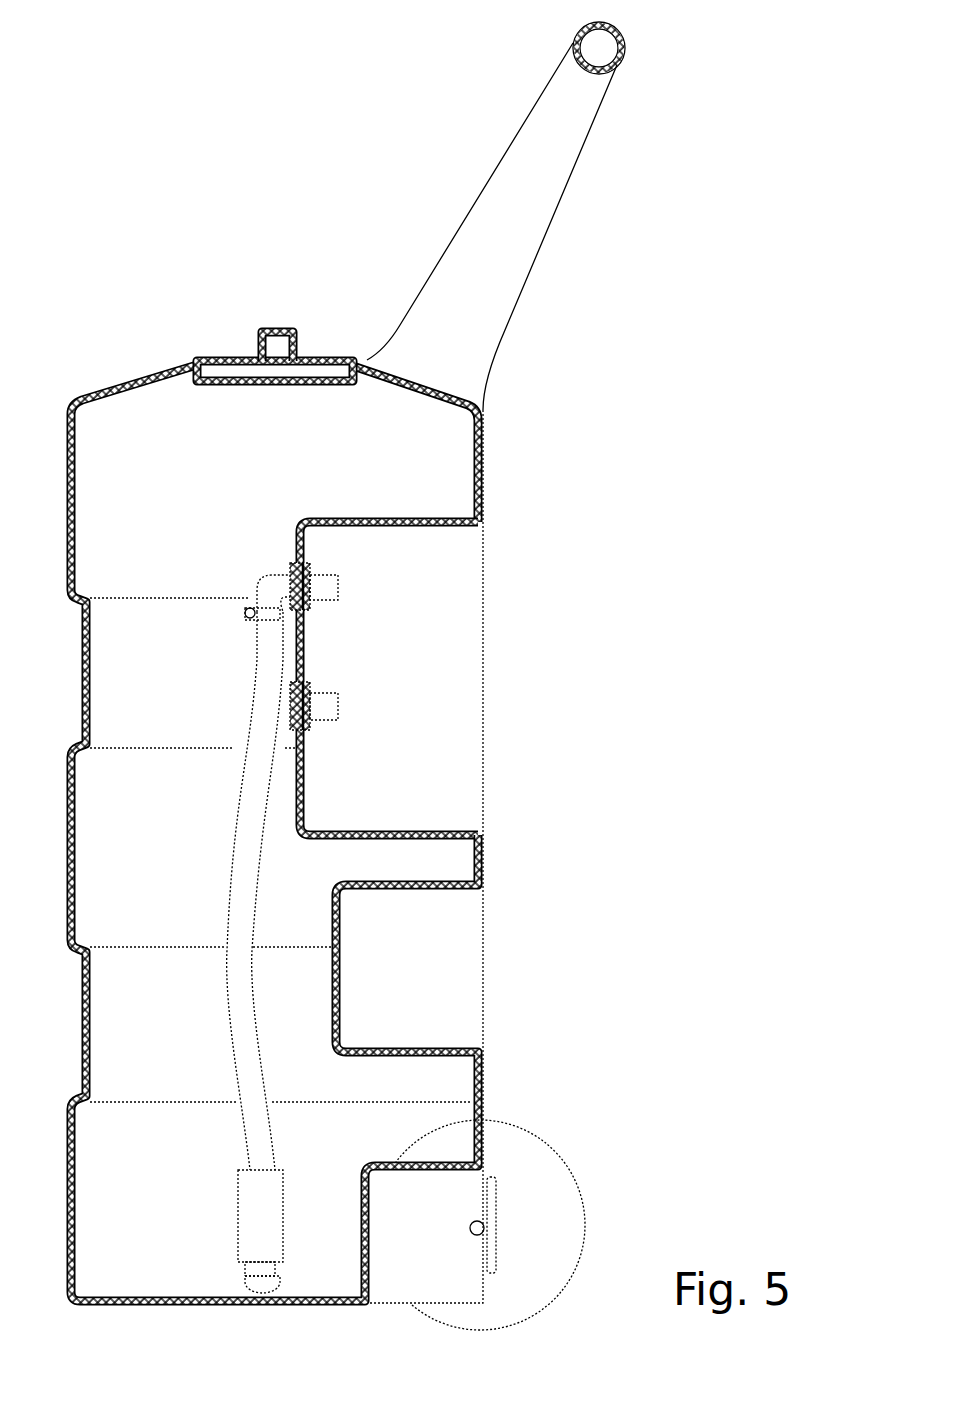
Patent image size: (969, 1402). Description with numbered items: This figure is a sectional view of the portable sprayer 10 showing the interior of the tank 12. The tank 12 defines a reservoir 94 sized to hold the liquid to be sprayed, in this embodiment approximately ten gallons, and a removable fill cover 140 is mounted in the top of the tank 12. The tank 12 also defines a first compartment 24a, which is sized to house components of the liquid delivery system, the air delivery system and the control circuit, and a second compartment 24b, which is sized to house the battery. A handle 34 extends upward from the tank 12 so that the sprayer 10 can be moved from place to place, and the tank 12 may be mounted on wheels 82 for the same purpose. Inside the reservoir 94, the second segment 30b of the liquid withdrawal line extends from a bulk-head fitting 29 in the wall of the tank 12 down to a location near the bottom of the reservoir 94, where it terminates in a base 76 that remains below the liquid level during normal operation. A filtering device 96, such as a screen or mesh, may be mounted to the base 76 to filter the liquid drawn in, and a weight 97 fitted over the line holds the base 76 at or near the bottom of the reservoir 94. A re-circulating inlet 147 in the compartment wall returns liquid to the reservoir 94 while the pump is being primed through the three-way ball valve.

The portable sprayer 10 is at (138, 138).
The tank 12 is at (485, 497).
The first compartment 24a is at (432, 661).
The second compartment 24b is at (437, 974).
The bulk-head fitting 29 is at (262, 583).
The second segment of liquid withdrawal line 30b is at (224, 990).
The handle 34 is at (622, 60).
The base 76 is at (250, 1272).
The wheels 82 is at (532, 1142).
The reservoir 94 is at (166, 819).
The filtering device 96 is at (280, 1282).
The weight 97 is at (242, 1198).
The fill cover 140 is at (247, 360).
The re-circulating inlet 147 is at (310, 727).